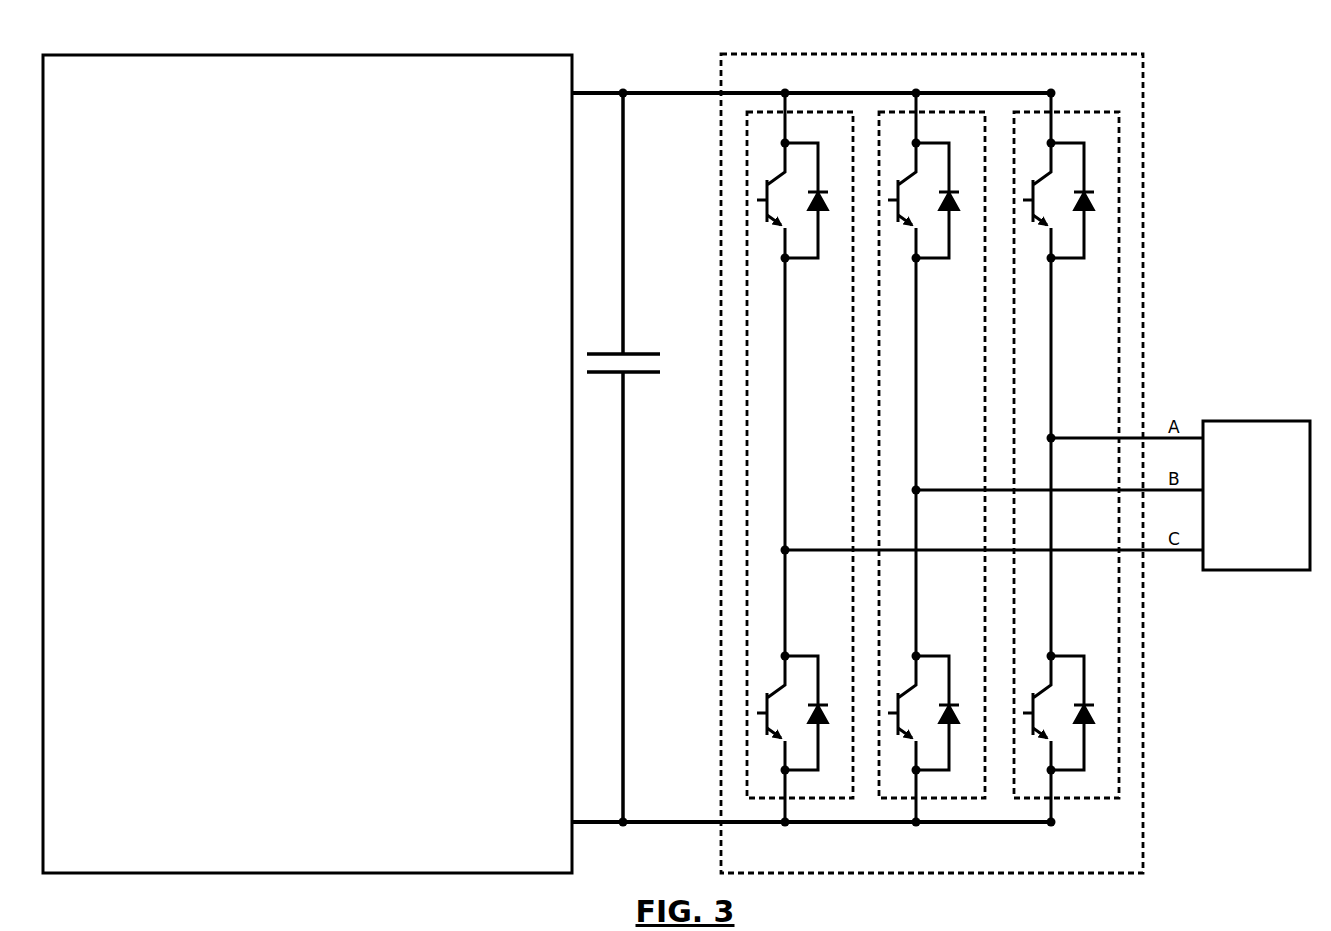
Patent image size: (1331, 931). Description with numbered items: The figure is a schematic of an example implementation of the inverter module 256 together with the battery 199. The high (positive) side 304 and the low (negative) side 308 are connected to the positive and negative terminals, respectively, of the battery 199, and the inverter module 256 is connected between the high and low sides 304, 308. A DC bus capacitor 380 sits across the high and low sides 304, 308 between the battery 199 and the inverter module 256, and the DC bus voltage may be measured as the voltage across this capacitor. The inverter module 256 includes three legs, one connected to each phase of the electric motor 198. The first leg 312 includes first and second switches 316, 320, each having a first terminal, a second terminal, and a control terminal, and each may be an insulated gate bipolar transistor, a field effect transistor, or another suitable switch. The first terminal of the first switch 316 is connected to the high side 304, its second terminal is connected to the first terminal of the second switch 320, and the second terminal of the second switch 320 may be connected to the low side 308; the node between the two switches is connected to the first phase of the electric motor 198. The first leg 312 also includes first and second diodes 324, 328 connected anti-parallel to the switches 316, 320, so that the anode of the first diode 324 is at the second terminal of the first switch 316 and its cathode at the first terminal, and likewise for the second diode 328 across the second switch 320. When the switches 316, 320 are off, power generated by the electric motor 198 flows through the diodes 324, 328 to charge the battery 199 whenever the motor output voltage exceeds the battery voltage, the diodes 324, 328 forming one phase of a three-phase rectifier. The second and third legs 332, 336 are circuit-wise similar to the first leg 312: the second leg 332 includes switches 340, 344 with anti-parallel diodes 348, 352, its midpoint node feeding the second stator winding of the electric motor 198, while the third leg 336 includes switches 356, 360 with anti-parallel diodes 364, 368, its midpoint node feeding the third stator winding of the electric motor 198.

The battery 199 is at (325, 55).
The high side 304 is at (688, 93).
The low side 308 is at (684, 822).
The DC bus capacitor 380 is at (639, 354).
The inverter module 256 is at (1143, 70).
The first leg 312 is at (798, 112).
The second leg 332 is at (930, 112).
The third leg 336 is at (1080, 112).
The first switch 316 is at (758, 162).
The second switch 320 is at (762, 678).
The first diode 324 is at (827, 182).
The second diode 328 is at (827, 690).
The switch 340 is at (900, 165).
The switch 344 is at (897, 676).
The anti-parallel diode 348 is at (959, 182).
The anti-parallel diode 352 is at (960, 690).
The switch 356 is at (1036, 165).
The switch 360 is at (1032, 676).
The anti-parallel diode 364 is at (1100, 197).
The anti-parallel diode 368 is at (1100, 710).
The electric motor 198 is at (1257, 570).